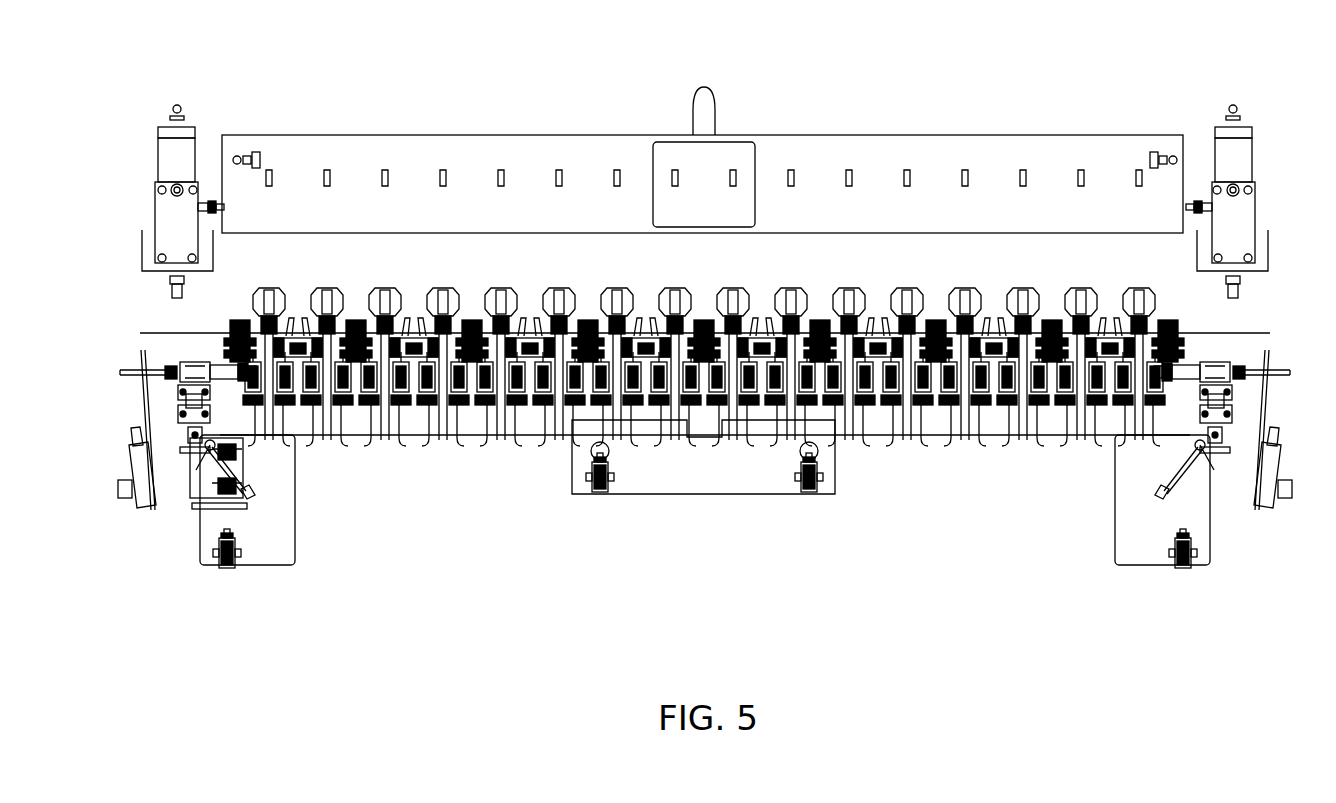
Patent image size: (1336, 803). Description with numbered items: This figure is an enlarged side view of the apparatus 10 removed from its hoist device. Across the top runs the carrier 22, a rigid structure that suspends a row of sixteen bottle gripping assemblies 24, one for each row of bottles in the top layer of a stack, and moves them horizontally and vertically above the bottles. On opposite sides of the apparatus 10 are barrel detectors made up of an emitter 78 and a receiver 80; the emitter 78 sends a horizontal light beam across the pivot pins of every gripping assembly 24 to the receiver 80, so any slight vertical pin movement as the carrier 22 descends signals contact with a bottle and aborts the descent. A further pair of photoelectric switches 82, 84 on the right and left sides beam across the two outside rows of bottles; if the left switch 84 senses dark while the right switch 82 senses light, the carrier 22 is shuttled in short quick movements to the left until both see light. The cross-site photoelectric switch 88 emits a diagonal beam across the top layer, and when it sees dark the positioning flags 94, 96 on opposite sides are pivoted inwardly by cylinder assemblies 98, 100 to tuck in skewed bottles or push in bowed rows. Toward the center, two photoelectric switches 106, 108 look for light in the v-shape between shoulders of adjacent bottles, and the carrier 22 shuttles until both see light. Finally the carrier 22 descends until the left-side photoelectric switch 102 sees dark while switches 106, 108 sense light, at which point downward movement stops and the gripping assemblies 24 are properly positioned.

The apparatus 10 is at (797, 100).
The carrier 22 is at (489, 125).
The bottle gripping assemblies 24 is at (289, 462).
The emitter 78 is at (1232, 408).
The receiver 80 is at (240, 373).
The photoelectric switch 82 is at (1183, 570).
The photoelectric switch 84 is at (228, 570).
The cross-site photoelectric switch 88 is at (213, 492).
The positioning flag 94 is at (1165, 480).
The positioning flag 96 is at (240, 477).
The cylinder assembly 98 is at (1188, 365).
The cylinder assembly 100 is at (178, 410).
The photoelectric switch 102 is at (218, 458).
The photoelectric switch 106 is at (809, 495).
The photoelectric switch 108 is at (600, 495).